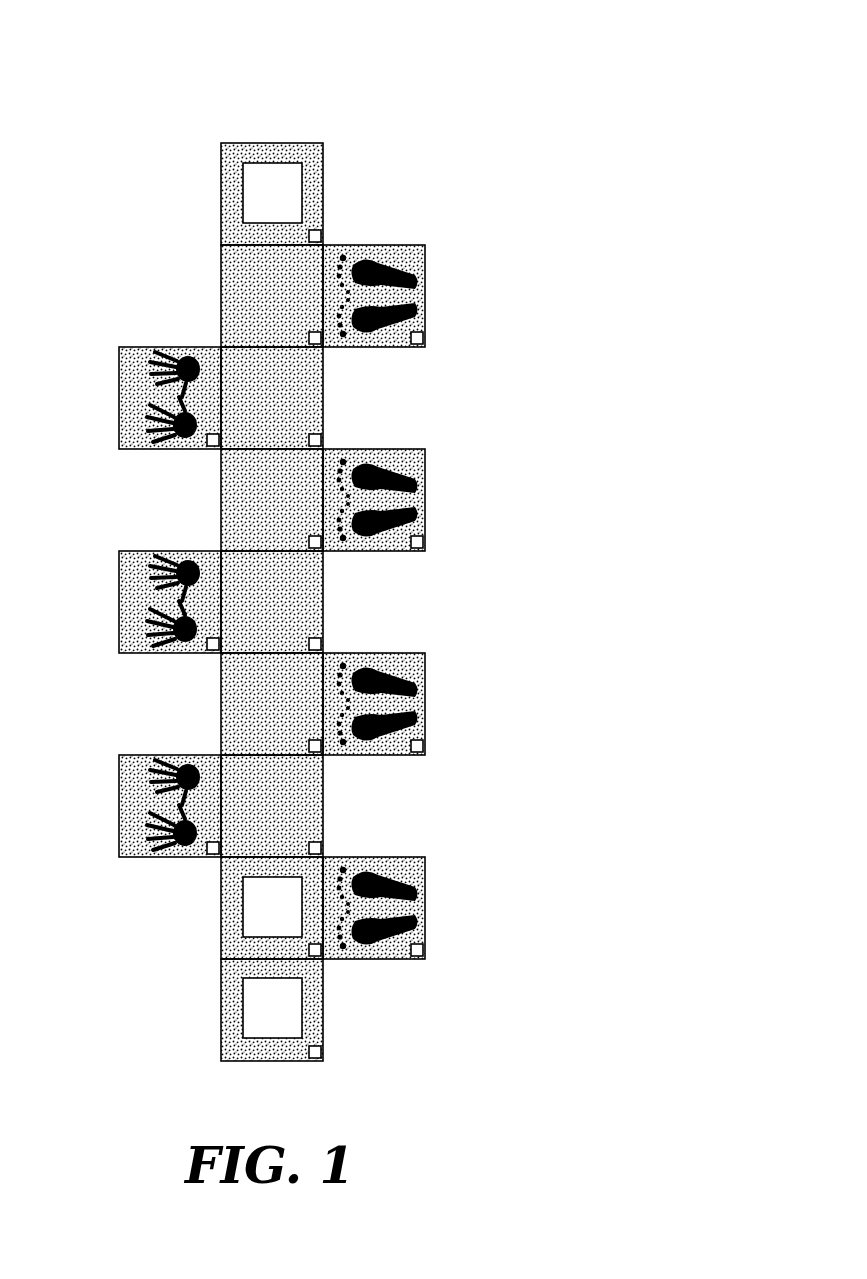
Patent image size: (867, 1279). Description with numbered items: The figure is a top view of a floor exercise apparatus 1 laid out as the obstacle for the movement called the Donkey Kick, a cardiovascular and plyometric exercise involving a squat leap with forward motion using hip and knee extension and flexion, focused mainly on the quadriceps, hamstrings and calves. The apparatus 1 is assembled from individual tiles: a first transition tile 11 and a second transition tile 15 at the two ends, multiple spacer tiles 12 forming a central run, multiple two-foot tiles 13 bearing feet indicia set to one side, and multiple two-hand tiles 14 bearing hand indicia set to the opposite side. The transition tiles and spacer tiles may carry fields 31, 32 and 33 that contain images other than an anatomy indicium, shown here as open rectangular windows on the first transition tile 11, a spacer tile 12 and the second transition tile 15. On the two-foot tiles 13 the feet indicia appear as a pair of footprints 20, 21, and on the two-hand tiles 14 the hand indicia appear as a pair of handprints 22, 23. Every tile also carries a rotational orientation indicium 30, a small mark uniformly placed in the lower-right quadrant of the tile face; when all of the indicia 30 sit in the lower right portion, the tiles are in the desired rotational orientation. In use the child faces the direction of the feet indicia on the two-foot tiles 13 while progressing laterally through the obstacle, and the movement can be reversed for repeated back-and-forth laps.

The apparatus 1 is at (465, 110).
The first transition tile 11 is at (254, 1010).
The spacer tiles 12 is at (233, 888).
The two-foot tiles 13 is at (412, 910).
The two-hand tiles 14 is at (131, 806).
The second transition tile 15 is at (309, 176).
The first footprint 20 is at (372, 875).
The second footprint 21 is at (372, 940).
The first handprint 22 is at (186, 772).
The second handprint 23 is at (184, 840).
The rotational orientation indicia 30 is at (421, 948).
The field 31 is at (302, 1005).
The field 32 is at (270, 877).
The field 33 is at (285, 170).